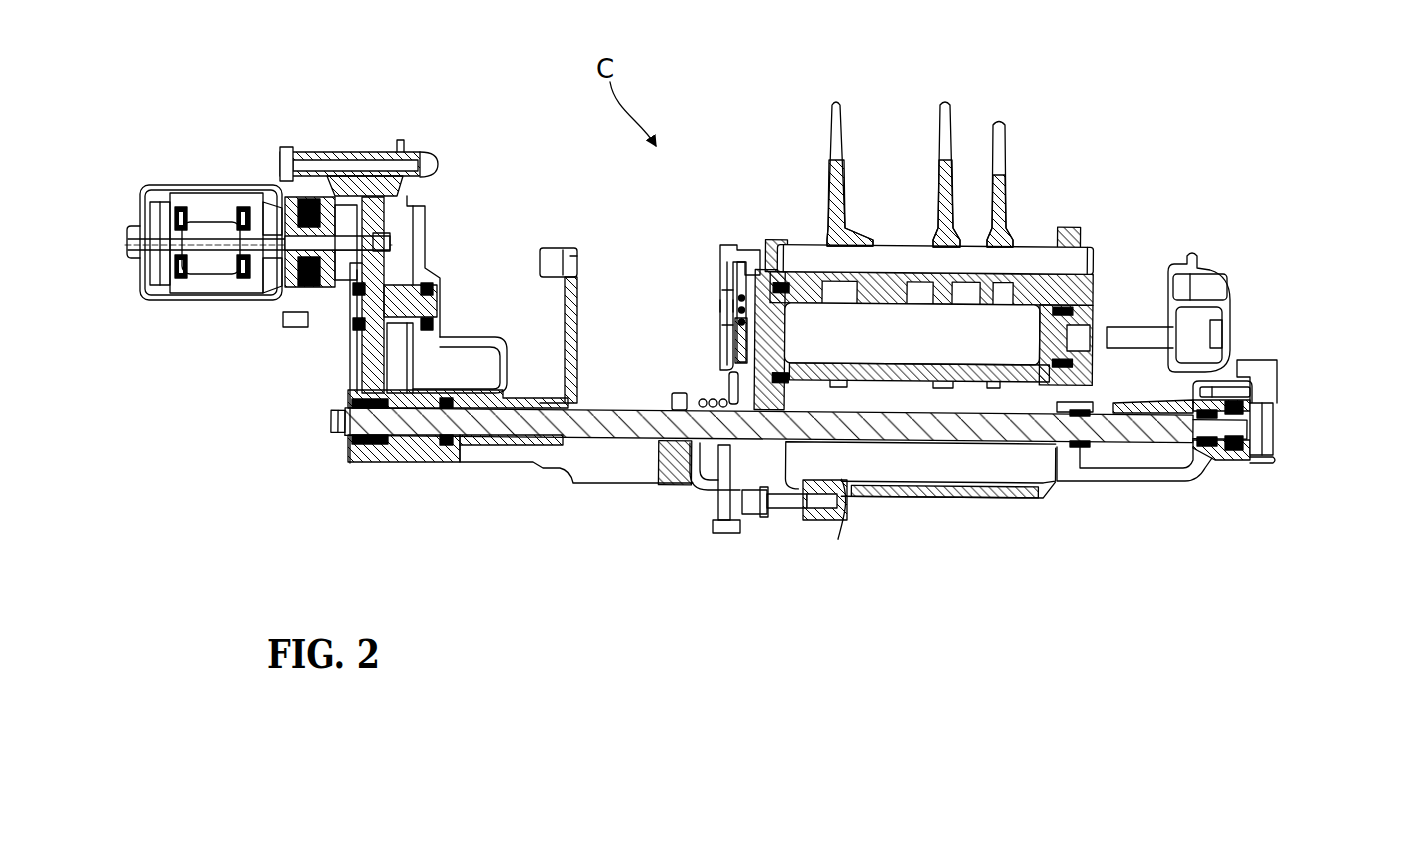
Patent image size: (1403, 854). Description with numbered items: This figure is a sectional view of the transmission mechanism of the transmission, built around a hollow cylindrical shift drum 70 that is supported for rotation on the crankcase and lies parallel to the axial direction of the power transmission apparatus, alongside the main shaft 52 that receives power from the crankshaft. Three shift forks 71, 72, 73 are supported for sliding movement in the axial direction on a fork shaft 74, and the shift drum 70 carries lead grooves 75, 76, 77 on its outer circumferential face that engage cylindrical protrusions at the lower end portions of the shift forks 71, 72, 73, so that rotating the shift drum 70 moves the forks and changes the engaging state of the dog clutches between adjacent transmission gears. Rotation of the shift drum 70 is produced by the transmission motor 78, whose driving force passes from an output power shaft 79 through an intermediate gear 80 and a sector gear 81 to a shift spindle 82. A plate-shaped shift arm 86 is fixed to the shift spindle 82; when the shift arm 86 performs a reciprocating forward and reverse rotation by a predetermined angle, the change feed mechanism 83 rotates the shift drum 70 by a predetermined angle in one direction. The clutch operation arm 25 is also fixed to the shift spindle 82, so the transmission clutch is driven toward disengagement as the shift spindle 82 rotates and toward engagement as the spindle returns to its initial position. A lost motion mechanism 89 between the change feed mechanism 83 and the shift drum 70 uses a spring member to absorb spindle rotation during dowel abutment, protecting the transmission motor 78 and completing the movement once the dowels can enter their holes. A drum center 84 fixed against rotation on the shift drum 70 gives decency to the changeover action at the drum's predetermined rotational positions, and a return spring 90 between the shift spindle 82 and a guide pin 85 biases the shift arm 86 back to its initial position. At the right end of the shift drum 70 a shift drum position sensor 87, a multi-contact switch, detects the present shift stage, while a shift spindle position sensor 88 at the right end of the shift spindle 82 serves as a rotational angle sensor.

The clutch operation arm 25 is at (578, 305).
The main shaft 52 is at (800, 520).
The shift drum 70 is at (877, 380).
The shift fork 71 is at (842, 187).
The shift fork 72 is at (950, 187).
The shift fork 73 is at (1005, 190).
The fork shaft 74 is at (893, 260).
The lead groove 75 is at (837, 386).
The lead groove 76 is at (944, 386).
The lead groove 77 is at (996, 386).
The transmission motor 78 is at (207, 273).
The output power shaft 79 is at (372, 228).
The intermediate gear 80 is at (413, 266).
The sector gear 81 is at (405, 368).
The shift spindle 82 is at (610, 420).
The change feed mechanism 83 is at (713, 302).
The drum center 84 is at (728, 355).
The guide pin 85 is at (747, 500).
The shift arm 86 is at (728, 385).
The shift drum position sensor 87 is at (1203, 340).
The shift spindle position sensor 88 is at (1262, 437).
The lost motion mechanism 89 is at (718, 282).
The return spring 90 is at (707, 463).